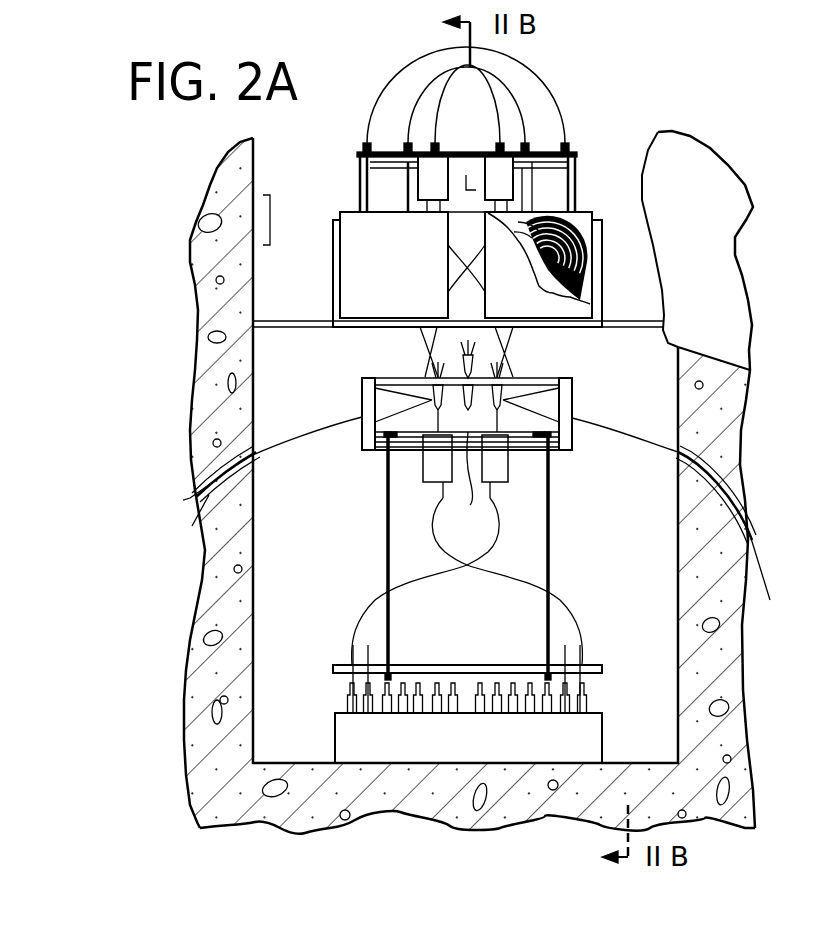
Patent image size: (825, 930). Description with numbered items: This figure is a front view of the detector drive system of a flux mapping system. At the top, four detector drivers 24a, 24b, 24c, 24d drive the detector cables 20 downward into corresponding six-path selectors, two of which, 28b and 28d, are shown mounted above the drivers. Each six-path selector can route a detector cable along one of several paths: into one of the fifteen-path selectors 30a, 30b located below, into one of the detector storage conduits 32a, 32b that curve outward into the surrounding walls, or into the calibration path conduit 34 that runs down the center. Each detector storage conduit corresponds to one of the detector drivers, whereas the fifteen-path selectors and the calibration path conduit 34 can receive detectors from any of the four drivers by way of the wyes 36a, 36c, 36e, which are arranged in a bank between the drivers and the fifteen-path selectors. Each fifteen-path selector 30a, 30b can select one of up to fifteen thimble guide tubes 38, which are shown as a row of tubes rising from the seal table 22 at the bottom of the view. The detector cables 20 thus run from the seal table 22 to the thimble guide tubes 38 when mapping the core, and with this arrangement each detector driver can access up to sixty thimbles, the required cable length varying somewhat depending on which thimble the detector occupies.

The detector cables 20 is at (548, 72).
The seal table 22 is at (348, 738).
The detector driver 24a is at (346, 212).
The detector driver 24b is at (340, 290).
The detector driver 24c is at (625, 200).
The detector driver 24d is at (602, 290).
The 6-path selector 28b is at (537, 165).
The 6-path selector 28d is at (428, 168).
The 15-path selector 30a is at (428, 470).
The 15-path selector 30b is at (505, 470).
The detector storage conduit 32a is at (184, 500).
The detector storage conduit 32b is at (739, 494).
The calibration path conduit 34 is at (467, 548).
The wye 36a is at (362, 445).
The wye 36c is at (572, 445).
The wye 36e is at (478, 358).
The thimble guide tubes 38 is at (340, 697).